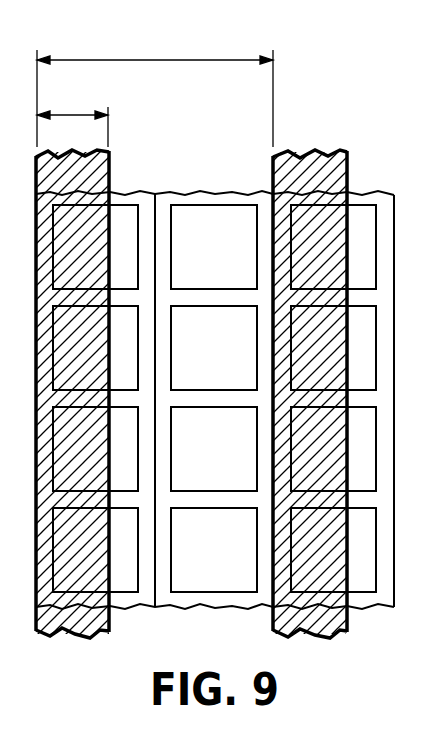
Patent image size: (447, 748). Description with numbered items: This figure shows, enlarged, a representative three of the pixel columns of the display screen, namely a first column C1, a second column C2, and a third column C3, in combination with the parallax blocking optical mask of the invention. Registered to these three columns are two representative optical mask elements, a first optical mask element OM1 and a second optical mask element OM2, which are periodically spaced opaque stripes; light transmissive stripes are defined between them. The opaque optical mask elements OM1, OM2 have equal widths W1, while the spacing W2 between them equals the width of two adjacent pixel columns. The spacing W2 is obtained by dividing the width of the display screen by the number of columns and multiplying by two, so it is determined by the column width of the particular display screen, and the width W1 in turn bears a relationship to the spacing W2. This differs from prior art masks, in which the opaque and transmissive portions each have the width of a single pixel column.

The width of optical mask element W1 is at (72, 110).
The spacing between optical mask elements W2 is at (155, 83).
The first column C1 is at (132, 192).
The second column C2 is at (212, 192).
The third column C3 is at (383, 198).
The first optical mask element OM1 is at (60, 639).
The second optical mask element OM2 is at (302, 152).